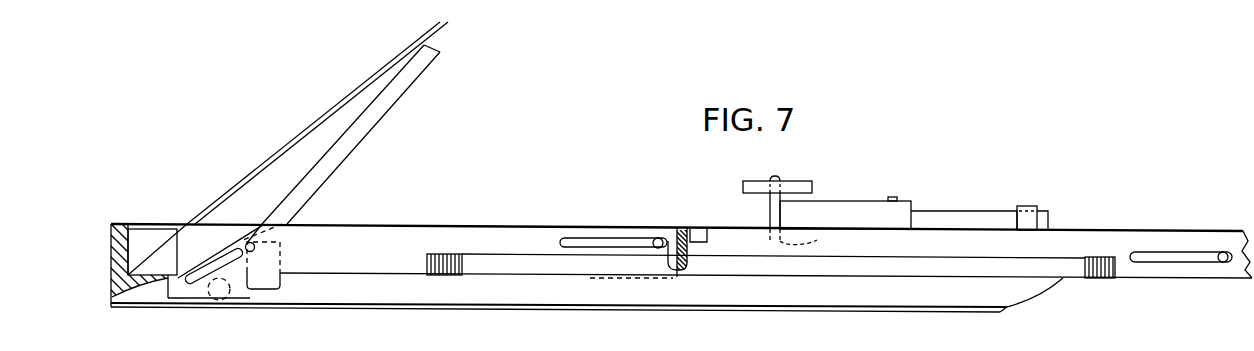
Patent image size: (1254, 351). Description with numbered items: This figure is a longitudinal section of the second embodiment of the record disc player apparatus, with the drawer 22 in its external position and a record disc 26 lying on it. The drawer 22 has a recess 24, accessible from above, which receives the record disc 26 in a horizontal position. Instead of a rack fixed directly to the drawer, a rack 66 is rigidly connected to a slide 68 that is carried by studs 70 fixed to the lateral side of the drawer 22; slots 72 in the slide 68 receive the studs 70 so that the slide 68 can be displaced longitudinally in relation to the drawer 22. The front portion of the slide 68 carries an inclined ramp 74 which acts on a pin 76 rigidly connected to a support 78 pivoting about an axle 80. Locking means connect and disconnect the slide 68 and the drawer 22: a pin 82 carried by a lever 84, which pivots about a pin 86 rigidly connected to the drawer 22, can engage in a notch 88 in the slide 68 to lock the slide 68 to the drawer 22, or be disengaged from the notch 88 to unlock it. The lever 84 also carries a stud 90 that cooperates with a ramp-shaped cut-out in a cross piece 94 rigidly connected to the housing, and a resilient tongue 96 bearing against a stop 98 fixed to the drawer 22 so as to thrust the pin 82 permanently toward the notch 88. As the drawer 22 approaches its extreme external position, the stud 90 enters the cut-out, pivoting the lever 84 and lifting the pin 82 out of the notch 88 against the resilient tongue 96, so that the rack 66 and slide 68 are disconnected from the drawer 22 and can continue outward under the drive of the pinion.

The drawer 22 is at (513, 227).
The recess 24 is at (147, 240).
The record disc 26 is at (284, 148).
The rack 66 is at (450, 276).
The slide 68 is at (415, 237).
The studs 70 is at (657, 239).
The slots 72 is at (612, 241).
The inclined ramp 74 is at (205, 276).
The pin 76 is at (256, 249).
The support 78 is at (329, 160).
The axle 80 is at (219, 302).
The pin 82 is at (808, 241).
The lever 84 is at (847, 213).
The pin 86 is at (894, 199).
The notch 88 is at (702, 233).
The stud 90 is at (777, 177).
The cross piece 94 is at (757, 167).
The resilient tongue 96 is at (975, 212).
The stop 98 is at (1037, 217).